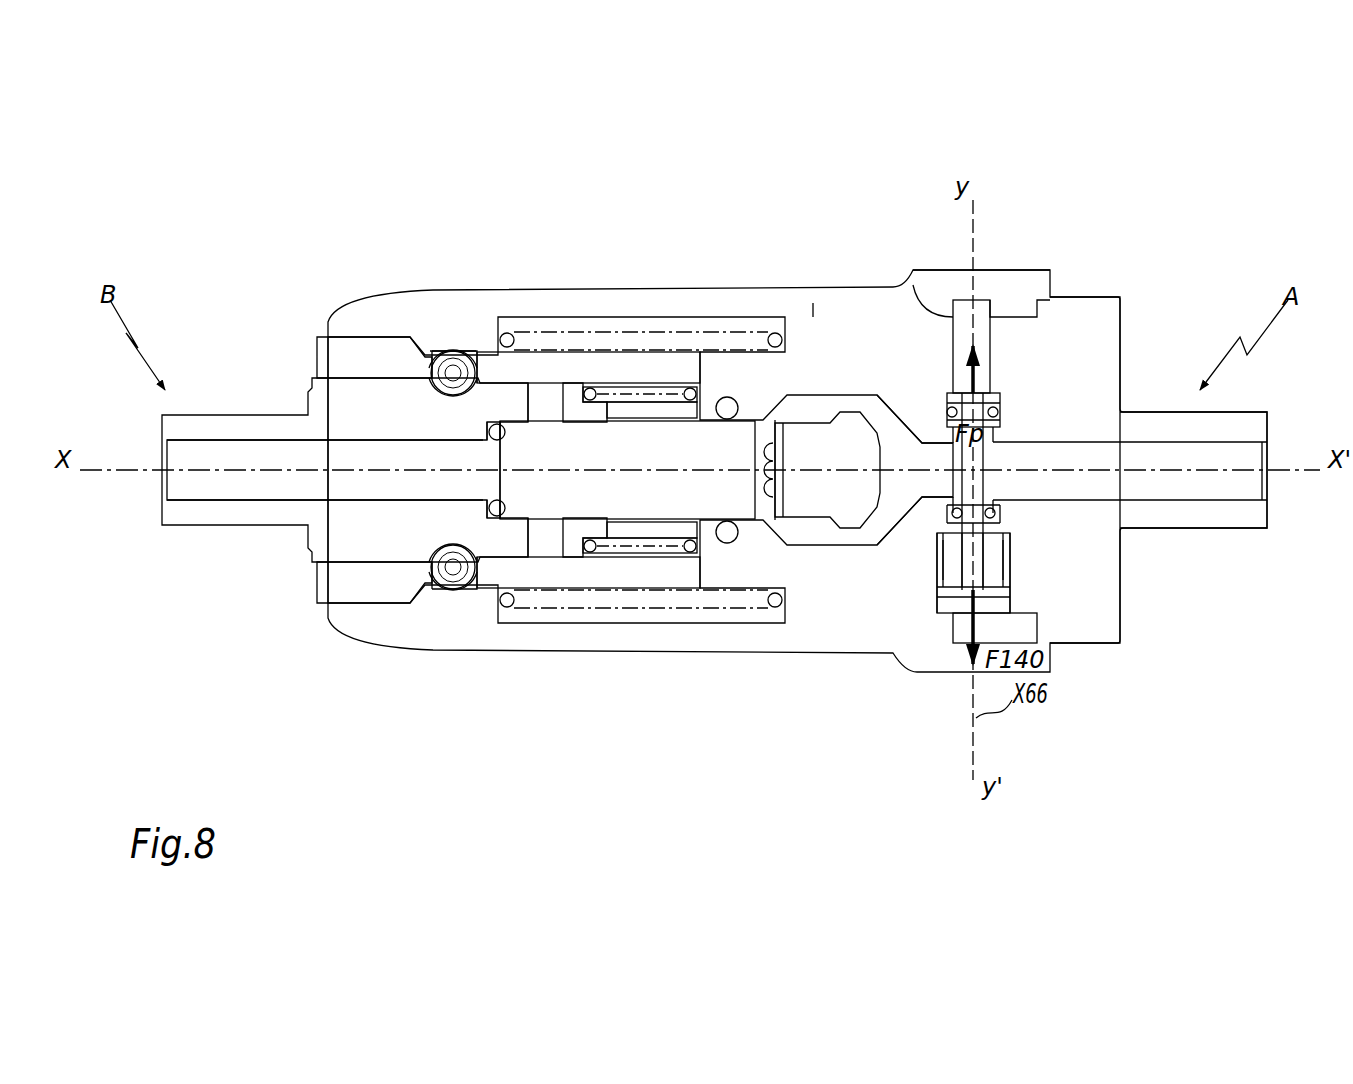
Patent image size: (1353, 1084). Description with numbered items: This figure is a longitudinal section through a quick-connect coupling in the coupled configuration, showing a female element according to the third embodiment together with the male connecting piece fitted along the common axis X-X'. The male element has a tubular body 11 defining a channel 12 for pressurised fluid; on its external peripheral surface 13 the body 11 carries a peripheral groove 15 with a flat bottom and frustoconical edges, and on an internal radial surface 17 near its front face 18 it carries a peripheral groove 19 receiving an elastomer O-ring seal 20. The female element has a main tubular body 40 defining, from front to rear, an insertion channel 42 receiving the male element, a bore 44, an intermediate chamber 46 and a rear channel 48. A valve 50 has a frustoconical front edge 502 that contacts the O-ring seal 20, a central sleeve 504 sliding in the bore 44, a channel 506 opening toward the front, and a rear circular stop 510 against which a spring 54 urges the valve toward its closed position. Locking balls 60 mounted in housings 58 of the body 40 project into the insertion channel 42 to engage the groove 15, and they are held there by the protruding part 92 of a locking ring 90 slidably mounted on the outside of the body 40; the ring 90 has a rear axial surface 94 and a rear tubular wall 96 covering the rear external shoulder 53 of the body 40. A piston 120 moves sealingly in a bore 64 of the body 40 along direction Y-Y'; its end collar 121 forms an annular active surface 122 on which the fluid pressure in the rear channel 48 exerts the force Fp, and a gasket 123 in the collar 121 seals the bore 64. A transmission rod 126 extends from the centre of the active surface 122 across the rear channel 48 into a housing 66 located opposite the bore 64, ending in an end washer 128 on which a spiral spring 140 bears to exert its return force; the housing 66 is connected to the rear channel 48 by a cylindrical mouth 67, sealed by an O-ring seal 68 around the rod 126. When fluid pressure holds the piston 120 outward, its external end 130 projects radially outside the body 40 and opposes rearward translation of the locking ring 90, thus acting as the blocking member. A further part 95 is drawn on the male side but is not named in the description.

The tubular body 11 is at (353, 400).
The channel 12 is at (250, 513).
The external peripheral surface 13 is at (363, 577).
The peripheral groove 15 is at (443, 552).
The internal radial surface 17 is at (548, 458).
The front face 18 is at (536, 545).
The peripheral groove 19 is at (527, 433).
The O-ring seal 20 is at (500, 433).
The main tubular body 40 is at (1088, 308).
The insertion channel 42 is at (567, 540).
The bore 44 is at (610, 457).
The intermediate chamber 46 is at (818, 537).
The rear channel 48 is at (1140, 490).
The valve 50 is at (802, 405).
The rear external shoulder 53 is at (1028, 298).
The spring 54 is at (652, 427).
The housings 58 is at (438, 348).
The locking balls 60 is at (458, 370).
The bore 64 is at (1005, 400).
The housing 66 is at (995, 522).
The cylindrical mouth 67 is at (995, 518).
The O-ring seal 68 is at (1008, 530).
The locking ring 90 is at (590, 300).
The protruding part 92 is at (426, 348).
The rear axial surface 94 is at (968, 290).
The upper bearing ring 95 is at (370, 345).
The rear tubular wall 96 is at (1043, 268).
The piston 120 is at (982, 335).
The end collar 121 is at (1002, 415).
The active surface 122 is at (980, 484).
The gasket 123 is at (947, 412).
The transmission rod 126 is at (1010, 523).
The end washer 128 is at (957, 597).
The external end 130 is at (933, 302).
The spiral spring 140 is at (933, 548).
The frustoconical front edge 502 is at (492, 520).
The central sleeve 504 is at (710, 515).
The channel 506 is at (603, 318).
The rear circular stop 510 is at (815, 315).